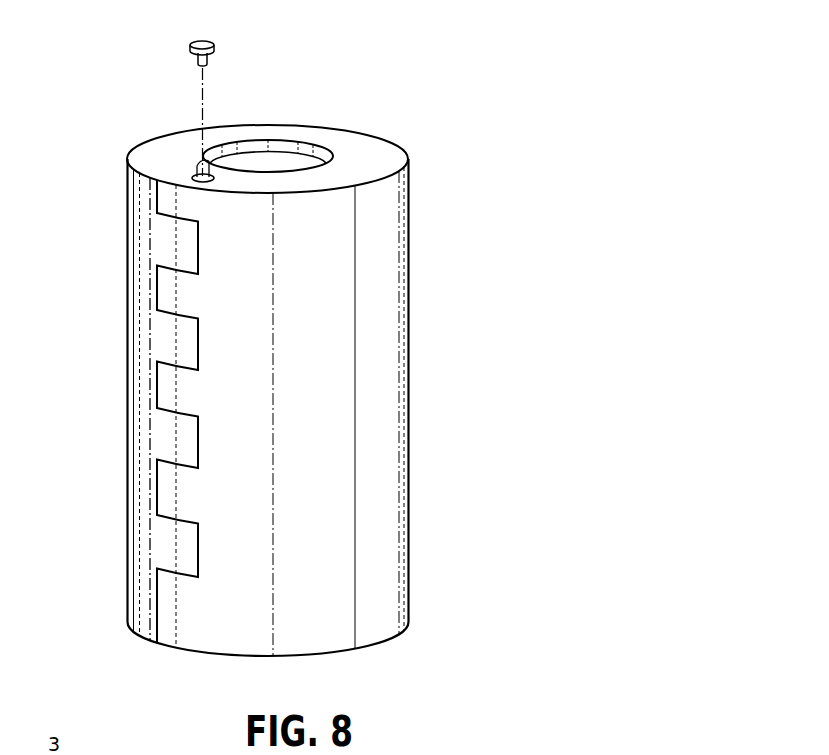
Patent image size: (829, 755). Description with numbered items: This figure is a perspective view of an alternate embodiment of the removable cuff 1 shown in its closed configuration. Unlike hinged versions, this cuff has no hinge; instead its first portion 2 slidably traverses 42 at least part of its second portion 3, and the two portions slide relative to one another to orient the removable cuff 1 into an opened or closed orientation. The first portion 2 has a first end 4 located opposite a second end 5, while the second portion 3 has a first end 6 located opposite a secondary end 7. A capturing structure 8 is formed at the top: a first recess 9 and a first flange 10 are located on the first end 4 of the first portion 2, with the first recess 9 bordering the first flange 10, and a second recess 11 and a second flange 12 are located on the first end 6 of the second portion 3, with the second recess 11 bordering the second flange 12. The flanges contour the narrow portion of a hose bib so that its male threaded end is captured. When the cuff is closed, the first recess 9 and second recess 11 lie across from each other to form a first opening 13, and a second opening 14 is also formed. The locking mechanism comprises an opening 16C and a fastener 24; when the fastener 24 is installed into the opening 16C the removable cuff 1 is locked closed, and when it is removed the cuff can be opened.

The removable cuff 1 is at (533, 302).
The first portion 2 is at (378, 363).
The second portion 3 is at (143, 247).
The first end 4 is at (409, 181).
The second end 5 is at (362, 650).
The first end 6 is at (263, 126).
The secondary end 7 is at (150, 642).
The capturing structure 8 is at (302, 140).
The first recess 9 is at (302, 176).
The first flange 10 is at (388, 156).
The second recess 11 is at (206, 128).
The second flange 12 is at (304, 136).
The first opening 13 is at (240, 156).
The second opening 14 is at (219, 657).
The opening 16C is at (201, 176).
The fastener 24 is at (192, 46).
The slidably traverses 42 is at (185, 325).